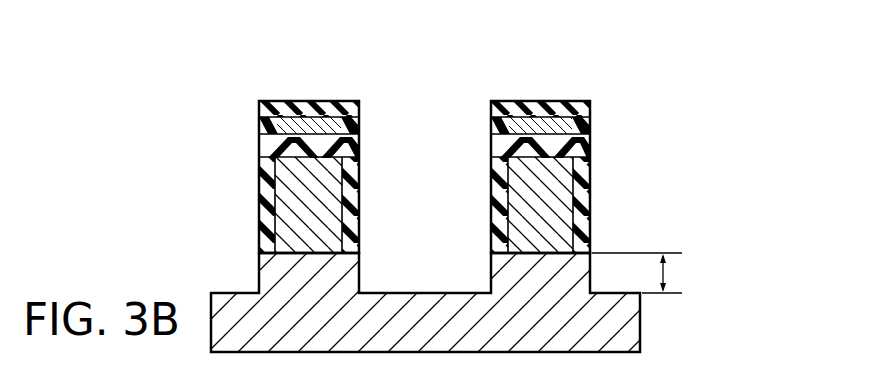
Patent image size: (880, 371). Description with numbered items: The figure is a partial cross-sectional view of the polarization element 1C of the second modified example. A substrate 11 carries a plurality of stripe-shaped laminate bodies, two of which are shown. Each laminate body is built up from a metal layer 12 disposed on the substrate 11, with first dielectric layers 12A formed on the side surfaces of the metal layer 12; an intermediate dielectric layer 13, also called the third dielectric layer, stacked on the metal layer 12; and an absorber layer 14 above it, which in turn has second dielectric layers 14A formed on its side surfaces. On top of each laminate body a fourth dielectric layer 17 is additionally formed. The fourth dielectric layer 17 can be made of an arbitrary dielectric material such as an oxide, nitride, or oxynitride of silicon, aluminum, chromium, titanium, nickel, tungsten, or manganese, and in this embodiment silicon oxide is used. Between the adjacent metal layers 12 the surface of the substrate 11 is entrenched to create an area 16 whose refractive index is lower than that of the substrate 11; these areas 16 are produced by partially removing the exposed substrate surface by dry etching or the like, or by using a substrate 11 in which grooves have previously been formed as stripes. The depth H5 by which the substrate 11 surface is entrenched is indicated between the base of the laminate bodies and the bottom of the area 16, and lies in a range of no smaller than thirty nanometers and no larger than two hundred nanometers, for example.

The polarization element 1C is at (707, 103).
The substrate 11 is at (620, 322).
The metal layer 12 is at (295, 236).
The first dielectric layer 12A is at (270, 190).
The intermediate dielectric layer 13 is at (265, 148).
The absorber layer 14 is at (267, 130).
The second dielectric layer 14A is at (358, 127).
The area 16 is at (428, 281).
The fourth dielectric layer 17 is at (293, 108).
The depth H5 is at (647, 273).